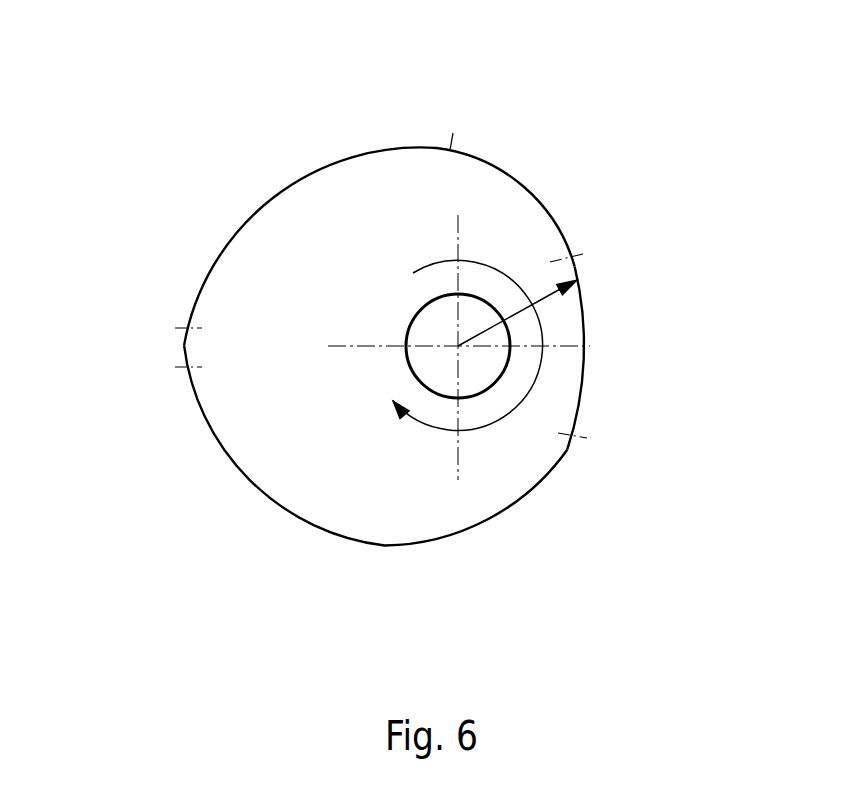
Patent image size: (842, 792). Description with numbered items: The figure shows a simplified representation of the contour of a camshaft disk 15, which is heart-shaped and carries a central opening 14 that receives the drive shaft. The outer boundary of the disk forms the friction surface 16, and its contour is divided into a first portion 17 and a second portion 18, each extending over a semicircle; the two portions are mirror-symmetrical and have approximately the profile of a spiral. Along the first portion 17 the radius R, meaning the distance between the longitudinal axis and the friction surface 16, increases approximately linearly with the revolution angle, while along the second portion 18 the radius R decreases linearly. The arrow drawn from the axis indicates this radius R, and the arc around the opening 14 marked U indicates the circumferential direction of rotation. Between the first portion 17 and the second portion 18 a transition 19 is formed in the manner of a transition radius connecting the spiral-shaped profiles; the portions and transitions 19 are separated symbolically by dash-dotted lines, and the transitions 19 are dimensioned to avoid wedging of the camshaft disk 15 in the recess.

The opening 14 is at (472, 369).
The camshaft disk 15 is at (398, 339).
The friction surface 16 is at (450, 150).
The first portion 17 is at (412, 547).
The second portion 18 is at (500, 168).
The transition 19 is at (183, 342).
The radius R is at (540, 330).
The circumferential direction U is at (533, 385).